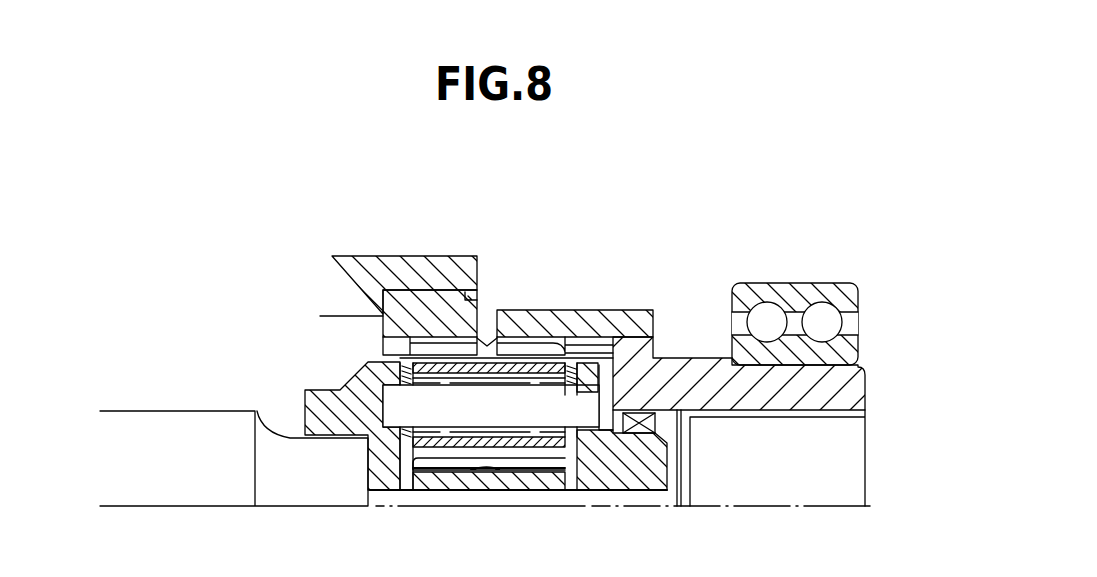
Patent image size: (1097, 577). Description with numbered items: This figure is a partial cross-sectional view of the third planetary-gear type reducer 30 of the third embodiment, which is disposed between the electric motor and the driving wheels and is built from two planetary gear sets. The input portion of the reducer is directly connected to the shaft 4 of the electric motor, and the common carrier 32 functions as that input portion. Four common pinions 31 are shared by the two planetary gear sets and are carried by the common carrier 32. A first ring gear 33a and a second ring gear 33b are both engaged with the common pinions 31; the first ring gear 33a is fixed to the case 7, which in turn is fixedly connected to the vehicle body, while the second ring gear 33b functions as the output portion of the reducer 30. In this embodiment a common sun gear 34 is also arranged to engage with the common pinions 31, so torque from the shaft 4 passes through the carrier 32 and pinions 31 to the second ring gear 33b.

The shaft 4 is at (207, 410).
The case 7 is at (450, 262).
The third planetary-gear type reducer 30 is at (517, 283).
The common pinions 31 is at (540, 458).
The common carrier 32 is at (327, 397).
The first ring gear 33a is at (410, 297).
The second ring gear 33b is at (572, 320).
The common sun gear 34 is at (455, 480).